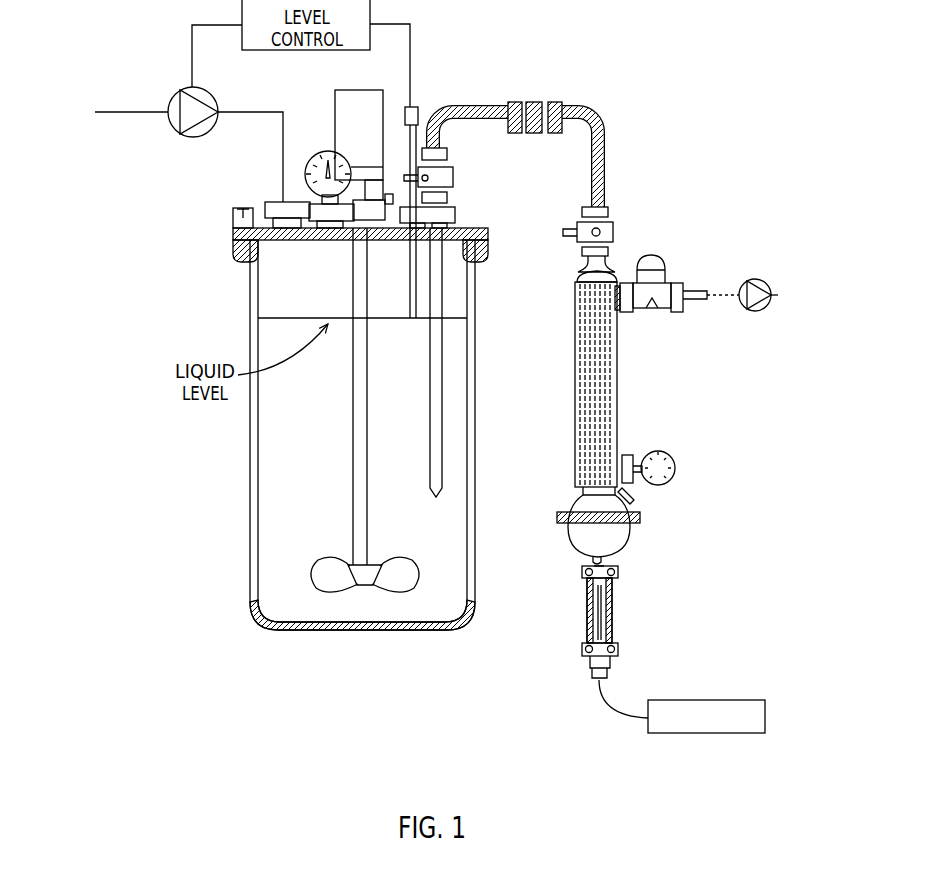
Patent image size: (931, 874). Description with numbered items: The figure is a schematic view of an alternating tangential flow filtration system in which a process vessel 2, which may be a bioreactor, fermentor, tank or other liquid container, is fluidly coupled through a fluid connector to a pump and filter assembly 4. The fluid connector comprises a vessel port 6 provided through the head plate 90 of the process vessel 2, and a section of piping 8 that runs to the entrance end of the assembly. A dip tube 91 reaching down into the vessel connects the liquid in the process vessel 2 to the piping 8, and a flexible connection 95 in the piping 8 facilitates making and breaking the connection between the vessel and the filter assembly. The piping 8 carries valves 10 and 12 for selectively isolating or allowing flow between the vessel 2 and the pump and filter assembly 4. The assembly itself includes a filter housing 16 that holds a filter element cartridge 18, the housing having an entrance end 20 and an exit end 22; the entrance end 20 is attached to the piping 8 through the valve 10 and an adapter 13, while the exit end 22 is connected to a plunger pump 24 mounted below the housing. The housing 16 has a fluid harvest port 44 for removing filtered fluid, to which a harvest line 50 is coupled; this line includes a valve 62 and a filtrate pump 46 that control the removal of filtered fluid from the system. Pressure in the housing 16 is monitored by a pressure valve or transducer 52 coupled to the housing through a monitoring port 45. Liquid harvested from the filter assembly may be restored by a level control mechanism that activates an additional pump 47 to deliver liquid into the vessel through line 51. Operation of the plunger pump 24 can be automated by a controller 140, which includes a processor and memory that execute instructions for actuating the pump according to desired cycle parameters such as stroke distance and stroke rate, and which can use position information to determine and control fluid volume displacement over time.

The process vessel 2 is at (250, 576).
The pump and filter assembly 4 is at (563, 408).
The vessel port 6 is at (350, 238).
The piping 8 is at (460, 105).
The valve 10 is at (618, 230).
The valve 12 is at (460, 186).
The adapter 13 is at (612, 266).
The filter housing 16 is at (622, 430).
The filter element cartridge 18 is at (602, 393).
The entrance end 20 is at (562, 285).
The exit end 22 is at (568, 488).
The plunger pump 24 is at (672, 528).
The fluid harvest port 44 is at (618, 300).
The monitoring port 45 is at (628, 492).
The filtrate pump 46 is at (770, 310).
The pump 47 is at (182, 140).
The harvest line 50 is at (783, 292).
The line 51 is at (152, 100).
The pressure valve or transducer 52 is at (680, 462).
The valve 62 is at (668, 260).
The head plate 90 is at (233, 229).
The dip tube 91 is at (428, 428).
The flexible connection 95 is at (546, 86).
The controller 140 is at (765, 712).